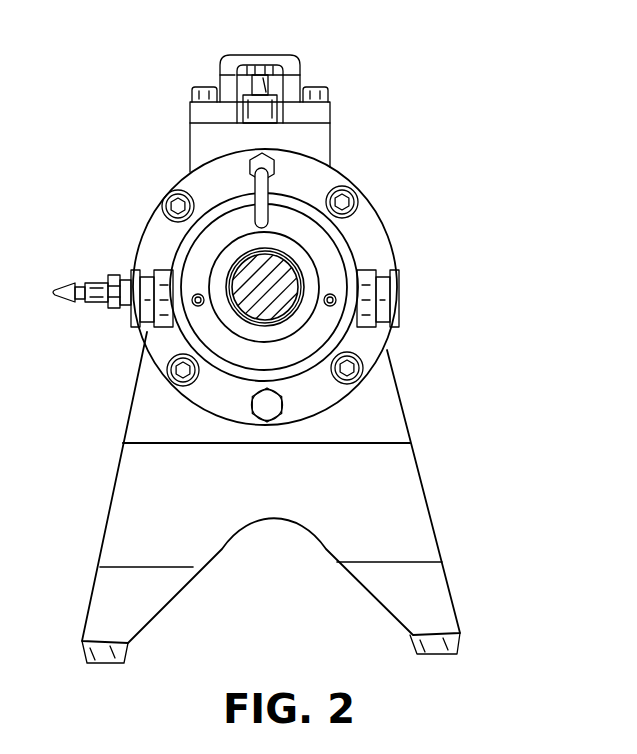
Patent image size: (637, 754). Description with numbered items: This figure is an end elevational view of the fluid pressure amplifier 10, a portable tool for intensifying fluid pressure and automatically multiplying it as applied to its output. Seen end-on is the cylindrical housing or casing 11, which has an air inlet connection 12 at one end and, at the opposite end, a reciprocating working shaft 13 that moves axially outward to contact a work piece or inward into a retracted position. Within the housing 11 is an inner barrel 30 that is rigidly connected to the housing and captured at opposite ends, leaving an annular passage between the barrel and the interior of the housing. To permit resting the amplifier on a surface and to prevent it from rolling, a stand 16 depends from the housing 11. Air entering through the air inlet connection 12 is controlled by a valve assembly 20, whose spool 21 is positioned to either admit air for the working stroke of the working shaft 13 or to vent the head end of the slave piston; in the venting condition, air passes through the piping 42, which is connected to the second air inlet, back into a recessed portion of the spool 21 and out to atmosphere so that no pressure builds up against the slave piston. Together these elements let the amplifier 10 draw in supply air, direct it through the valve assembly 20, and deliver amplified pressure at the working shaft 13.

The fluid pressure amplifier 10 is at (372, 97).
The housing 11 is at (378, 210).
The air inlet connection 12 is at (93, 283).
The working shaft 13 is at (277, 280).
The stand 16 is at (420, 550).
The valve assembly 20 is at (239, 101).
The spool 21 is at (268, 112).
The inner barrel 30 is at (312, 207).
The piping 42 is at (262, 188).